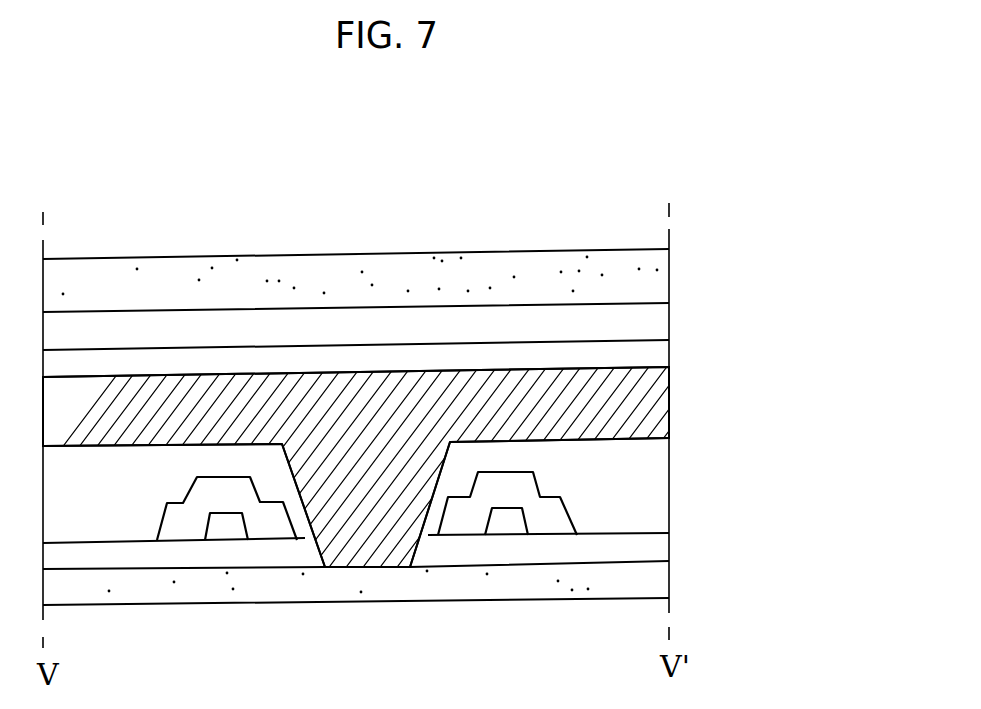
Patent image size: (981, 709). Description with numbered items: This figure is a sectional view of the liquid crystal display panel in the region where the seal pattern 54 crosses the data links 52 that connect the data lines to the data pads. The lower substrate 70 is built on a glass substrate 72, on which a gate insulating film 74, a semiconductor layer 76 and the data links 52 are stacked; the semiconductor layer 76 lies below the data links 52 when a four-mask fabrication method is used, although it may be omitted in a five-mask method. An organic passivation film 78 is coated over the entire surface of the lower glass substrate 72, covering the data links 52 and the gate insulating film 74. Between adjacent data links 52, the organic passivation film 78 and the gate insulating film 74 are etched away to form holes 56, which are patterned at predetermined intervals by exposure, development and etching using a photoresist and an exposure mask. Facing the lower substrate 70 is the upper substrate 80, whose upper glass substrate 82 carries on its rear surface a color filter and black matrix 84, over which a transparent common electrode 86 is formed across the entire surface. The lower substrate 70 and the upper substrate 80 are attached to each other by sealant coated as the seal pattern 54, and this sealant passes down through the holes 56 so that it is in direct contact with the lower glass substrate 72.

The data link 52 is at (183, 530).
The seal pattern 54 is at (657, 407).
The hole 56 is at (365, 560).
The lower substrate 70 is at (790, 480).
The glass substrate 72 is at (652, 577).
The gate insulating film 74 is at (655, 548).
The semiconductor layer 76 is at (226, 530).
The organic passivation film 78 is at (655, 487).
The upper substrate 80 is at (790, 260).
The upper glass substrate 82 is at (650, 278).
The color filter and black matrix 84 is at (655, 321).
The transparent common electrode 86 is at (655, 353).